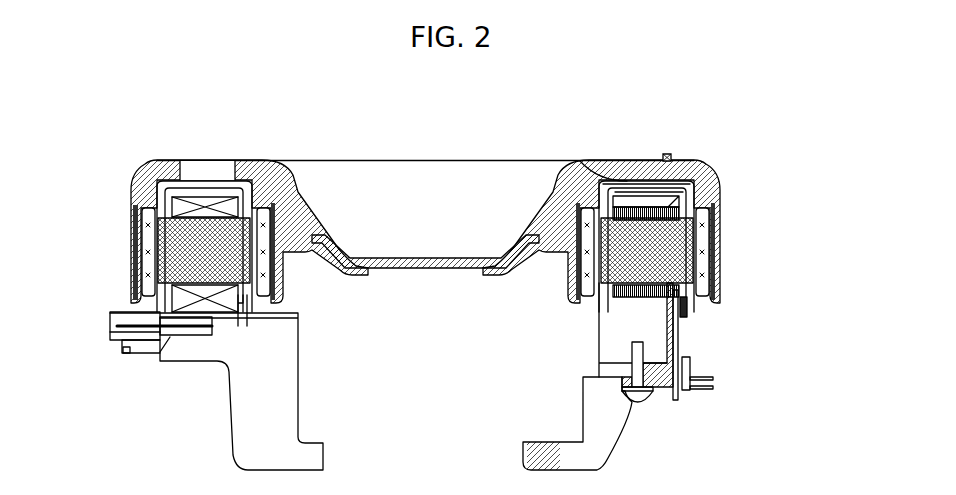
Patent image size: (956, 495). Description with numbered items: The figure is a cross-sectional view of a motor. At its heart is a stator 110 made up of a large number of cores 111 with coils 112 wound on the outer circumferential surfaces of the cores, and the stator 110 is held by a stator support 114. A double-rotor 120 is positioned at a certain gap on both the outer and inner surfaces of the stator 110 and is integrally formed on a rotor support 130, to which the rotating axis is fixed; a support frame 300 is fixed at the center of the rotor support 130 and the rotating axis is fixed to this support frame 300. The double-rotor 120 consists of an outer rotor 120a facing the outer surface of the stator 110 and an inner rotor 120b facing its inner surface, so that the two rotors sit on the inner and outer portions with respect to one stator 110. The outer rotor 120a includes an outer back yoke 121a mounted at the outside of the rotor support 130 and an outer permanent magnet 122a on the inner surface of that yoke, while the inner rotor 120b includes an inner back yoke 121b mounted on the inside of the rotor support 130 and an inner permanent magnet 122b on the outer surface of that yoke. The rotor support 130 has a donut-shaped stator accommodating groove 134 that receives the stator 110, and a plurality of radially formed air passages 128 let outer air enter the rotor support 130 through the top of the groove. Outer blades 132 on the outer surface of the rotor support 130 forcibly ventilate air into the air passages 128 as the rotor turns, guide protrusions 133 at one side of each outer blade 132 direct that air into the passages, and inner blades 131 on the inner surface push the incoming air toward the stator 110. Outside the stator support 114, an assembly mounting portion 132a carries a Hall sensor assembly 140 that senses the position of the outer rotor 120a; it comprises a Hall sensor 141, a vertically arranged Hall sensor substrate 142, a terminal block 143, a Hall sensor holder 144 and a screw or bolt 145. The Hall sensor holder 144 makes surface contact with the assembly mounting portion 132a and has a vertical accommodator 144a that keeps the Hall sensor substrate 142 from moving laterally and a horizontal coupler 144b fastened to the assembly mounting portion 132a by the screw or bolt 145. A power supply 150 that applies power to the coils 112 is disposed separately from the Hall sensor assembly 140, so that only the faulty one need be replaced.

The stator 110 is at (712, 200).
The core 111 is at (668, 210).
The coil 112 is at (675, 200).
The stator support 114 is at (610, 335).
The double-rotor 120 is at (623, 219).
The outer rotor 120a is at (762, 251).
The inner rotor 120b is at (506, 259).
The outer back yoke 121a is at (712, 231).
The inner back yoke 121b is at (566, 267).
The outer permanent magnet 122a is at (713, 250).
The inner permanent magnet 122b is at (567, 283).
The air passage 128 is at (205, 172).
The rotor support 130 is at (270, 177).
The inner blade 131 is at (628, 180).
The outer blade 132 is at (640, 158).
The assembly mounting portion 132a is at (668, 323).
The guide protrusion 133 is at (668, 156).
The stator accommodating groove 134 is at (583, 170).
The Hall sensor assembly 140 is at (727, 343).
The Hall sensor 141 is at (687, 306).
The Hall sensor substrate 142 is at (678, 338).
The terminal block 143 is at (690, 367).
The Hall sensor holder 144 is at (564, 373).
The vertical accommodator 144a is at (643, 350).
The horizontal coupler 144b is at (632, 387).
The screw or bolt 145 is at (643, 398).
The power supply 150 is at (128, 311).
The support frame 300 is at (387, 263).